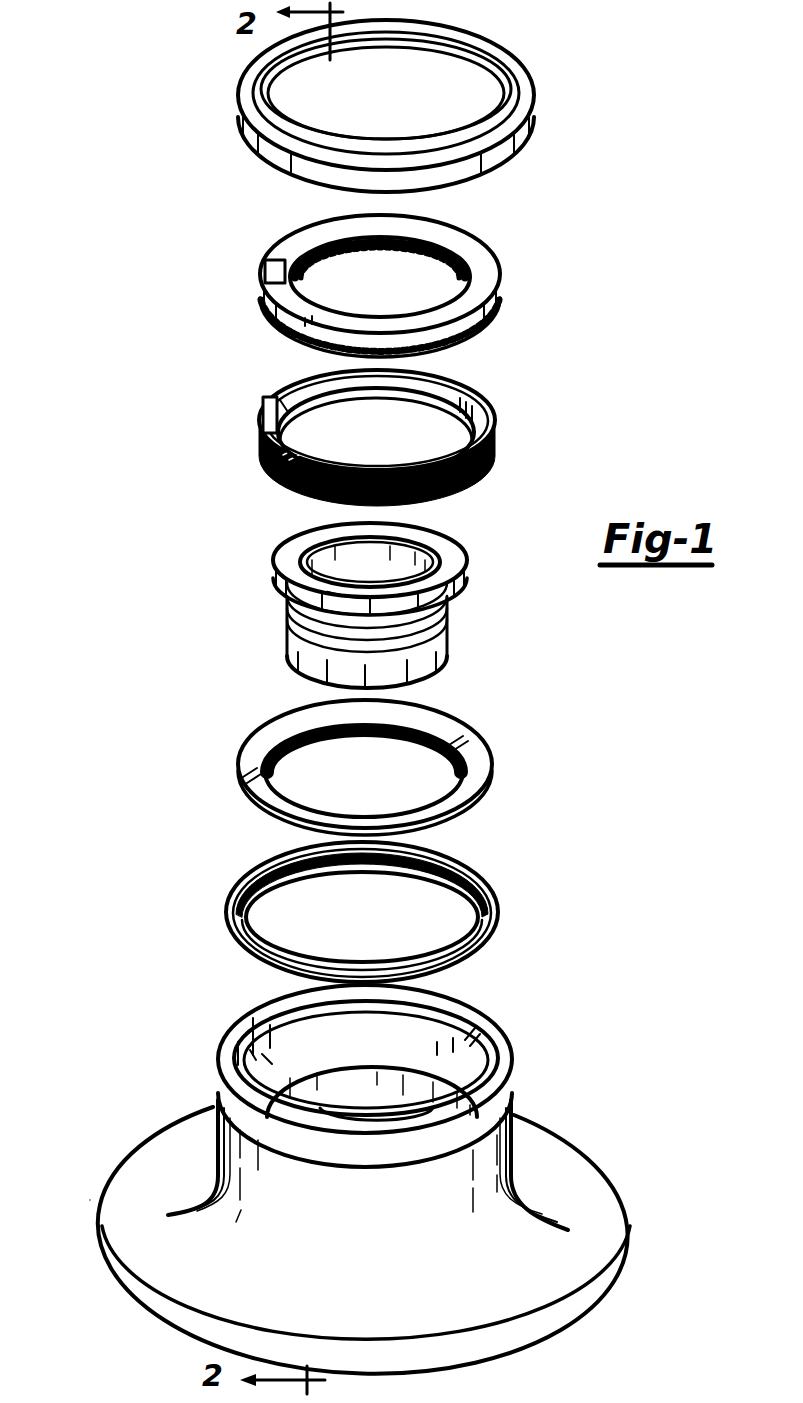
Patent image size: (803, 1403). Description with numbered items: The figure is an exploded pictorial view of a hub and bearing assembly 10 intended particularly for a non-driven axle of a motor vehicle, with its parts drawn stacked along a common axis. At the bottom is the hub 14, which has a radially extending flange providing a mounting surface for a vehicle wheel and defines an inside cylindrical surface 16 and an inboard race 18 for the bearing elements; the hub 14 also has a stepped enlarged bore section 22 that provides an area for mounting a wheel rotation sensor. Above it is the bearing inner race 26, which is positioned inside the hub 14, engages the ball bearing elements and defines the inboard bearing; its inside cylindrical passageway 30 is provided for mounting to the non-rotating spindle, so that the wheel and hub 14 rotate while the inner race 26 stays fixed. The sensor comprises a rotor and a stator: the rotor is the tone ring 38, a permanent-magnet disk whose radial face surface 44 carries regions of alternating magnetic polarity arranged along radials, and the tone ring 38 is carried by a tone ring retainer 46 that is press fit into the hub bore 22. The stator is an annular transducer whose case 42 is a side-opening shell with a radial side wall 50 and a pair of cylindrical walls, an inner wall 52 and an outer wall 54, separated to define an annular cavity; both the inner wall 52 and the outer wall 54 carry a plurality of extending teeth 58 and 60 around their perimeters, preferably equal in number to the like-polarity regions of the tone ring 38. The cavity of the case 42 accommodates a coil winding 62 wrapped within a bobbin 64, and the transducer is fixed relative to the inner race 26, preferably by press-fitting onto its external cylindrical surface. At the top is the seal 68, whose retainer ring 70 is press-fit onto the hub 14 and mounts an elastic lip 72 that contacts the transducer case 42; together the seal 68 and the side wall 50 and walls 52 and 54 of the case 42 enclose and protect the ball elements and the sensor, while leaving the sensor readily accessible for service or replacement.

The hub and bearing assembly 10 is at (122, 712).
The hub 14 is at (596, 1190).
The inside cylindrical surface 16 is at (472, 1067).
The inboard race 18 is at (280, 1058).
The stepped enlarged bore section 22 is at (480, 1014).
The bearing inner race 26 is at (478, 592).
The inside cylindrical passageway 30 is at (437, 554).
The tone ring 38 is at (480, 777).
The radial face surface 44 is at (463, 755).
The tone ring retainer 46 is at (487, 881).
The case 42 is at (487, 276).
The radial side wall 50 is at (454, 254).
The inner wall 52 is at (330, 255).
The outer wall 54 is at (483, 322).
The teeth 58 is at (426, 253).
The teeth 60 is at (470, 338).
The coil winding 62 is at (445, 485).
The bobbin 64 is at (482, 427).
The seal 68 is at (610, 104).
The retainer ring 70 is at (522, 143).
The elastic lip 72 is at (276, 78).